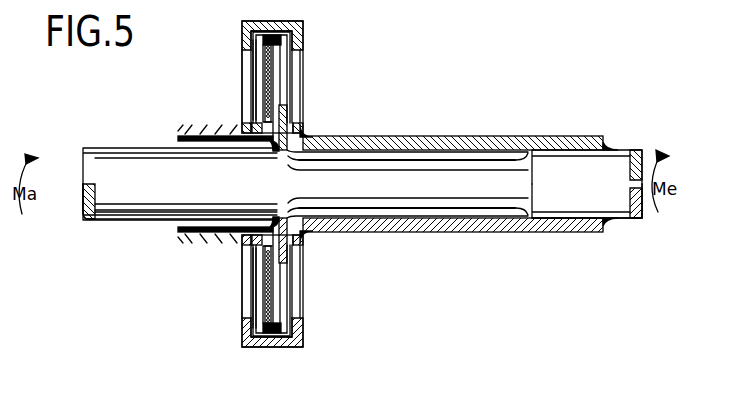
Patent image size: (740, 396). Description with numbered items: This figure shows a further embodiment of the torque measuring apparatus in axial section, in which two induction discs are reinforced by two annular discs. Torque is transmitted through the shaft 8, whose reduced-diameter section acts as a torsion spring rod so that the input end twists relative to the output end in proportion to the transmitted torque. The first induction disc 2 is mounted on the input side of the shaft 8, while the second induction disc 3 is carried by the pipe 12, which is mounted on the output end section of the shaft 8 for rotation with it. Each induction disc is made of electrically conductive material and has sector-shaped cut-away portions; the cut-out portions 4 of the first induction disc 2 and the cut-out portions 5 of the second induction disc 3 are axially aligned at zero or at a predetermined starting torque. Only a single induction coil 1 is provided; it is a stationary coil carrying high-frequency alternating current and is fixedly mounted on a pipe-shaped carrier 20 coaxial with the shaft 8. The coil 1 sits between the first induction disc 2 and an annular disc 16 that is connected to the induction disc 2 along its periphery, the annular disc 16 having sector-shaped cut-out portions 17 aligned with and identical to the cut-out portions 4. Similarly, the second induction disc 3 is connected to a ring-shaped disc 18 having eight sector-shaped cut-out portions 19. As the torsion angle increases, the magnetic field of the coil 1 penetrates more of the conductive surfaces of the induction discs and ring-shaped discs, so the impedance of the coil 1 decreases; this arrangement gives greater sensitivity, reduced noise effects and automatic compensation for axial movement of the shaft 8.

The induction coil 1 is at (272, 298).
The first induction disc 2 is at (303, 55).
The second induction disc 3 is at (293, 48).
The sector-shaped cut-away portions 4 is at (283, 88).
The sector-shaped cut-out portions 5 is at (296, 107).
The shaft 8 is at (166, 224).
The pipe 12 is at (462, 145).
The annular disc 16 is at (261, 57).
The sector-shaped cut-out portions 17 is at (263, 100).
The ring-shaped disc 18 is at (240, 83).
The sector-shaped cut-out portions 19 is at (247, 101).
The pipe-shaped carrier 20 is at (229, 236).